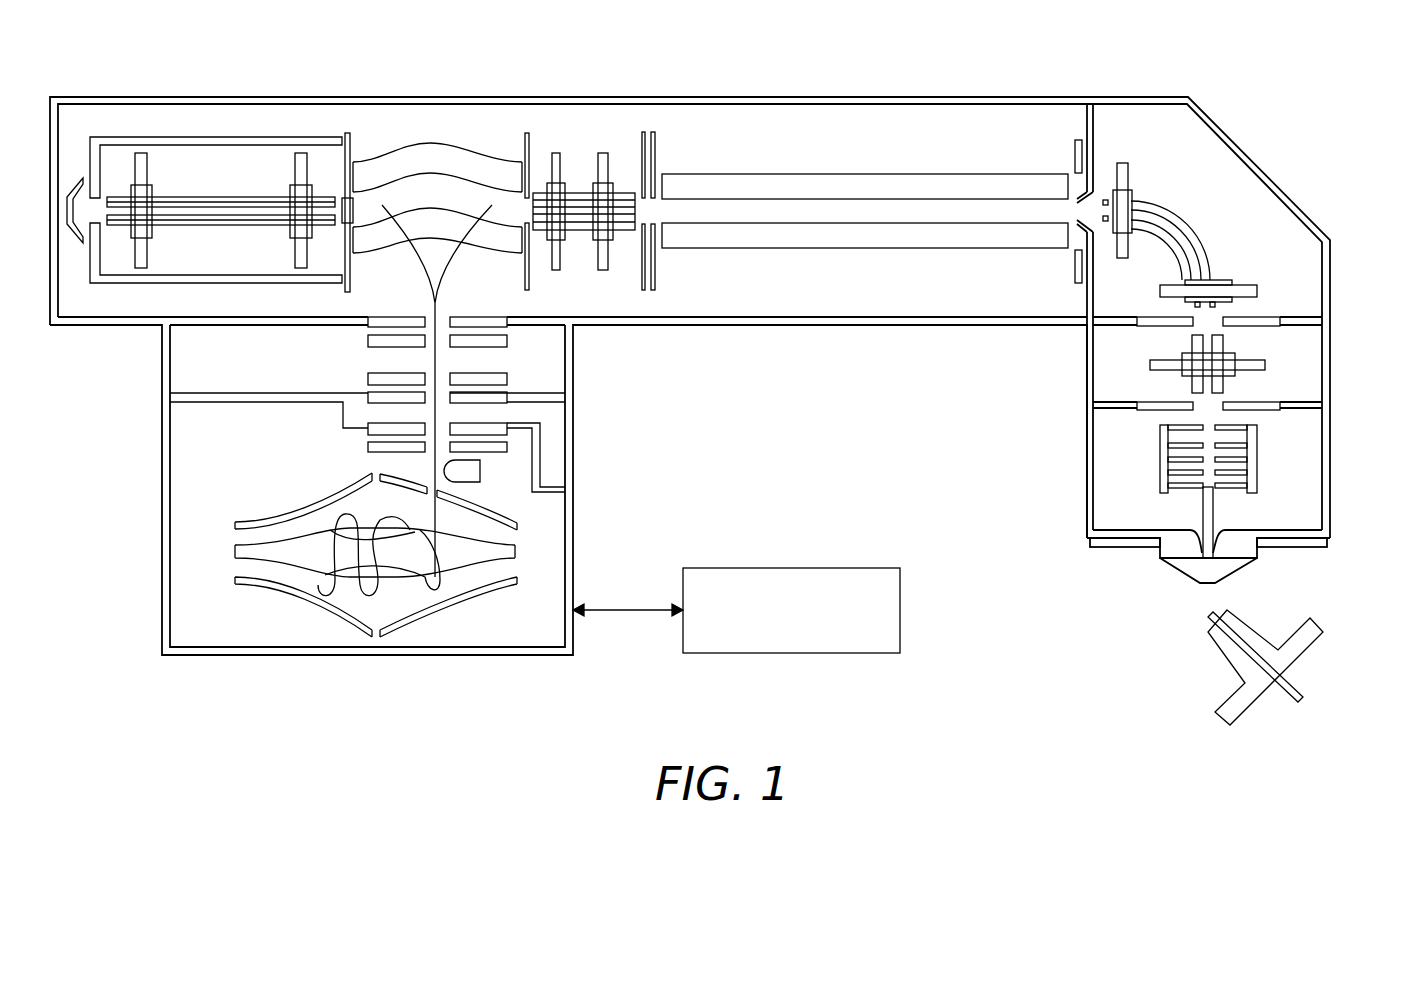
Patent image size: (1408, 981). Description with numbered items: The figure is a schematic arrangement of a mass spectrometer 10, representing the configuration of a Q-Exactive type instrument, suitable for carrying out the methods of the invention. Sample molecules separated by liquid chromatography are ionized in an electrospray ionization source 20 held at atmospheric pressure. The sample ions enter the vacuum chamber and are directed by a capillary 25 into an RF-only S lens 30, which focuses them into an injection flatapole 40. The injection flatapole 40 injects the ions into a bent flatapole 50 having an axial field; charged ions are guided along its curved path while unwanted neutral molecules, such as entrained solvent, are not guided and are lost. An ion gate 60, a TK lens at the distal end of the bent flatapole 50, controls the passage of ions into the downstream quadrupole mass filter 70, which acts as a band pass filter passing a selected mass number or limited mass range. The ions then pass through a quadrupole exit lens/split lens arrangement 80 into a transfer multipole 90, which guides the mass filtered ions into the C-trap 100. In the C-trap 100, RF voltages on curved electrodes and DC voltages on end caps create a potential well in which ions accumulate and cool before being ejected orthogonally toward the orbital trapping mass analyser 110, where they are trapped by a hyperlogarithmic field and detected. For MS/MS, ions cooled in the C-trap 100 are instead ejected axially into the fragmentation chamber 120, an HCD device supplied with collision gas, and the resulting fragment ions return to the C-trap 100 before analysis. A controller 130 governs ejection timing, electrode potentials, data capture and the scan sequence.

The mass spectrometer 10 is at (517, 704).
The electrospray ionization source 20 is at (1215, 649).
The capillary 25 is at (1203, 517).
The S lens 30 is at (1257, 460).
The injection flatapole 40 is at (1267, 368).
The bent flatapole 50 is at (1190, 228).
The ion gate 60 is at (1075, 140).
The quadrupole mass filter 70 is at (868, 172).
The quadrupole exit lens/split lens arrangement 80 is at (647, 292).
The transfer multipole 90 is at (578, 158).
The C-trap 100 is at (437, 155).
The orbital trapping mass analyser 110 is at (297, 612).
The fragmentation chamber 120 is at (217, 162).
The controller 130 is at (858, 568).